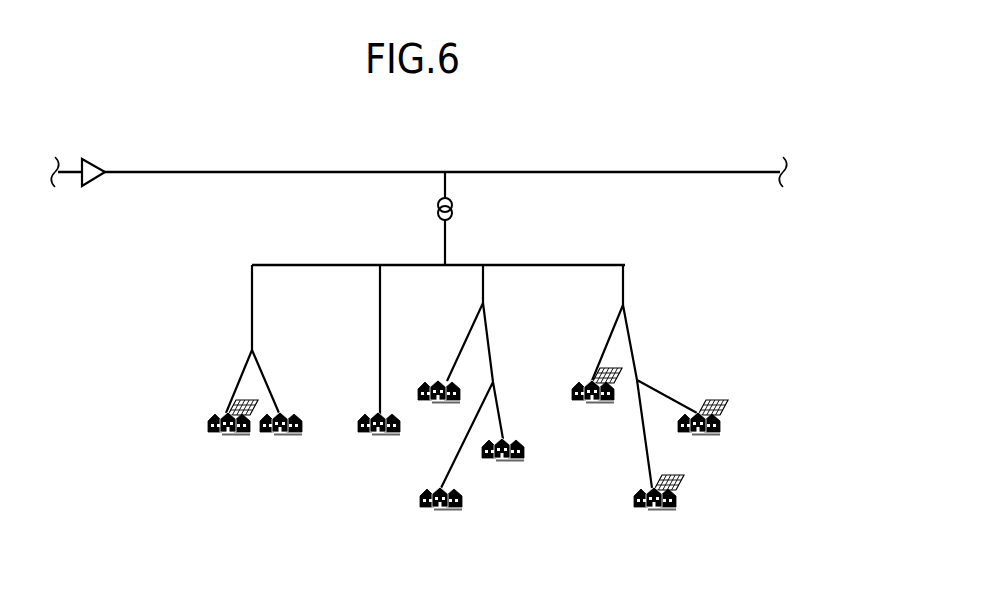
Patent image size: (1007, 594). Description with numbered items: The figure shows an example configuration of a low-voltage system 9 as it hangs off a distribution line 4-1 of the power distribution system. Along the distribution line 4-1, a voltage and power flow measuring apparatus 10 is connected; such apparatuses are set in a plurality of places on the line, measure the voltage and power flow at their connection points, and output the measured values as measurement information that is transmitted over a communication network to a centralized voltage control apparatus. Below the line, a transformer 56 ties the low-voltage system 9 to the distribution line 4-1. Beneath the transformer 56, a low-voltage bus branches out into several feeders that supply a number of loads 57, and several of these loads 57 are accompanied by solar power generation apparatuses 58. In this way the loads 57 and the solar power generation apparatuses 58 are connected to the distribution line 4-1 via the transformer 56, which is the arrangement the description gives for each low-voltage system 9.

The distribution line 4-1 is at (677, 171).
The voltage and power flow measuring apparatus 10 is at (97, 157).
The transformer 56 is at (452, 209).
The low-voltage system 9 is at (569, 238).
The load 57 is at (210, 423).
The solar power generation apparatus 58 is at (242, 404).